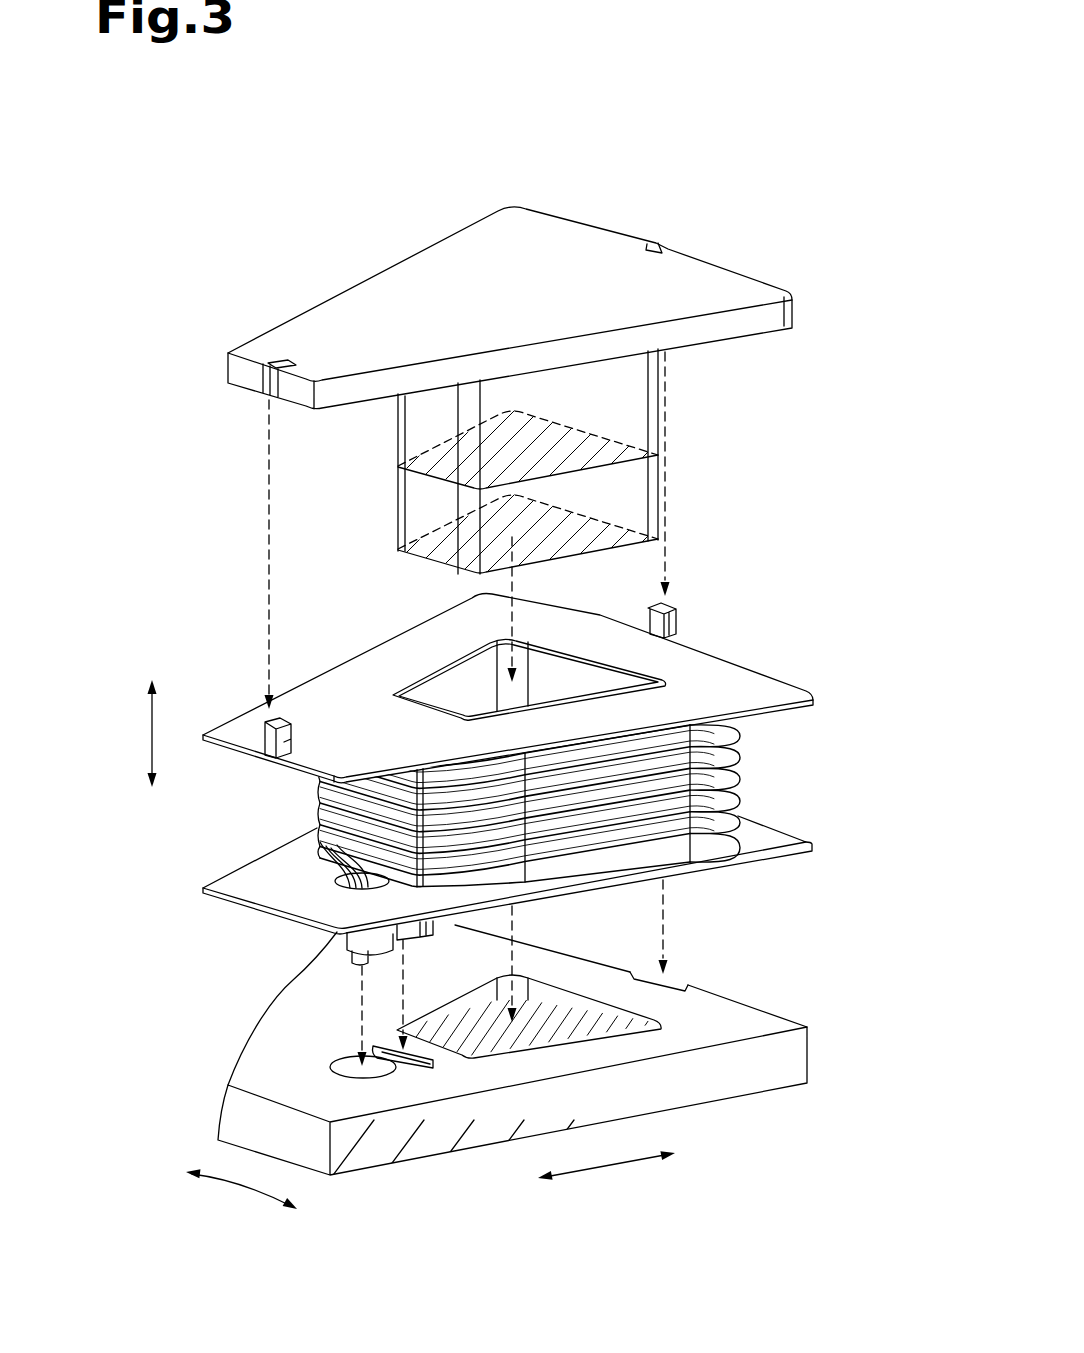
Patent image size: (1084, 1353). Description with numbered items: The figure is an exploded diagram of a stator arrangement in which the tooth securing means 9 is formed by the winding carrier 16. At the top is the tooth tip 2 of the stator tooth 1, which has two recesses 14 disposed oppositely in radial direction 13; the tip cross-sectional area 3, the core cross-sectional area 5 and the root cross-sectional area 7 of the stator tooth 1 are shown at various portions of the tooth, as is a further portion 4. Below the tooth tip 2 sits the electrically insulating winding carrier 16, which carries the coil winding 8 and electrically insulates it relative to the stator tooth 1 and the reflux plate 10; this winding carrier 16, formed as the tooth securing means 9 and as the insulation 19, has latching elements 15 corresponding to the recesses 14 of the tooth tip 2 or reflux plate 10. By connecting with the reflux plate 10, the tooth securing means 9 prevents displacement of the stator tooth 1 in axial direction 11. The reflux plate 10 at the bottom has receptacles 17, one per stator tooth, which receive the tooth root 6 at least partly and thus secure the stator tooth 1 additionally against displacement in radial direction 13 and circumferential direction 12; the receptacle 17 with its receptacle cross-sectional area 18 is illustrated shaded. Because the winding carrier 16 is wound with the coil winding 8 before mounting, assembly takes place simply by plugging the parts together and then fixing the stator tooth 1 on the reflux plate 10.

The stator tooth 1 is at (213, 150).
The tooth tip 2 is at (532, 327).
The tip cross-sectional area 3 is at (381, 303).
The housing insert 4 is at (507, 476).
The core cross-sectional area 5 is at (398, 452).
The tooth root 6 is at (648, 541).
The root cross-sectional area 7 is at (430, 542).
The coil winding 8 is at (717, 813).
The tooth securing means 9 is at (554, 696).
The winding carrier 16 is at (529, 679).
The insulation 19 is at (278, 738).
The reflux plate 10 is at (515, 1052).
The axial direction 11 is at (152, 732).
The circumferential direction 12 is at (242, 1190).
The radial direction 13 is at (616, 1172).
The recess 14 is at (672, 236).
The latching element 15 is at (678, 613).
The receptacle 17 is at (552, 1025).
The receptacle cross-sectional area 18 is at (438, 1011).